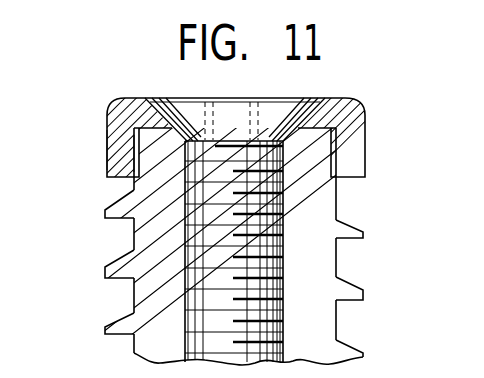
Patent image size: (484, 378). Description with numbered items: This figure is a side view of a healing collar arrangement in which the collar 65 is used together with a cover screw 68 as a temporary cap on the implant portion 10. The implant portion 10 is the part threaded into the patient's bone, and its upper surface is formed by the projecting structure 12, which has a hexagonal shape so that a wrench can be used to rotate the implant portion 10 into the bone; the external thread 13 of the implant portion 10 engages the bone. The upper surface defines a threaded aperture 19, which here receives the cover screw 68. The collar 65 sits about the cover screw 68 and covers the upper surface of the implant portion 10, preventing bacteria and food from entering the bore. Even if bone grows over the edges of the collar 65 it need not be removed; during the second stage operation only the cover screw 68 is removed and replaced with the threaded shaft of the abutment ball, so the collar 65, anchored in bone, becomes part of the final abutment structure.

The implant portion 10 is at (90, 241).
The projecting structure 12 is at (107, 152).
The external thread teeth 13 is at (108, 326).
The threaded aperture 19 is at (273, 327).
The collar 65 is at (353, 143).
The cover screw 68 is at (305, 97).